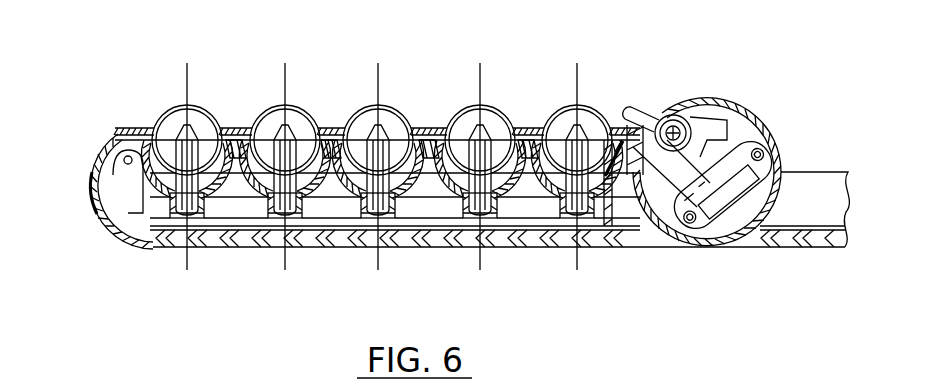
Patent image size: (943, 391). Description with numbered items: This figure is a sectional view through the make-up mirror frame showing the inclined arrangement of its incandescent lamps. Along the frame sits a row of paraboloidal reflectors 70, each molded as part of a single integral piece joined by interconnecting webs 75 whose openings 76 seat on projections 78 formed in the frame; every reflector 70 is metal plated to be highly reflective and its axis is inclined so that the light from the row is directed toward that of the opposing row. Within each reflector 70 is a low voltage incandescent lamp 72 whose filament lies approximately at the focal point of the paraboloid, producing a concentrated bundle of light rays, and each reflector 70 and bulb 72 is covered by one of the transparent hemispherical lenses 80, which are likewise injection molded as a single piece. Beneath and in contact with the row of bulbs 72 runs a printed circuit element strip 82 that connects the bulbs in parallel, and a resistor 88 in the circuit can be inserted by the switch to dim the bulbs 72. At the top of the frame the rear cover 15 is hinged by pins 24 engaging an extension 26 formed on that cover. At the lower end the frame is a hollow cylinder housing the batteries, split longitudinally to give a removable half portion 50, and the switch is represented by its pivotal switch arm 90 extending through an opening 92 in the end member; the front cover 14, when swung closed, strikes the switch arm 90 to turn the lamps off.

The front cover 14 is at (812, 190).
The rear cover 15 is at (520, 132).
The pins 24 is at (125, 157).
The extension 26 is at (128, 185).
The removable half portion 50 is at (767, 200).
The paraboloidal reflector 70 is at (200, 177).
The incandescent lamp 72 is at (182, 135).
The interconnecting webs 75 is at (431, 130).
The openings 76 is at (561, 130).
The projections 78 is at (233, 130).
The transparent hemispherical lenses 80 is at (365, 110).
The printed circuit element strip 82 is at (333, 214).
The resistor 88 is at (753, 227).
The switch arm 90 is at (632, 107).
The opening 92 is at (680, 108).